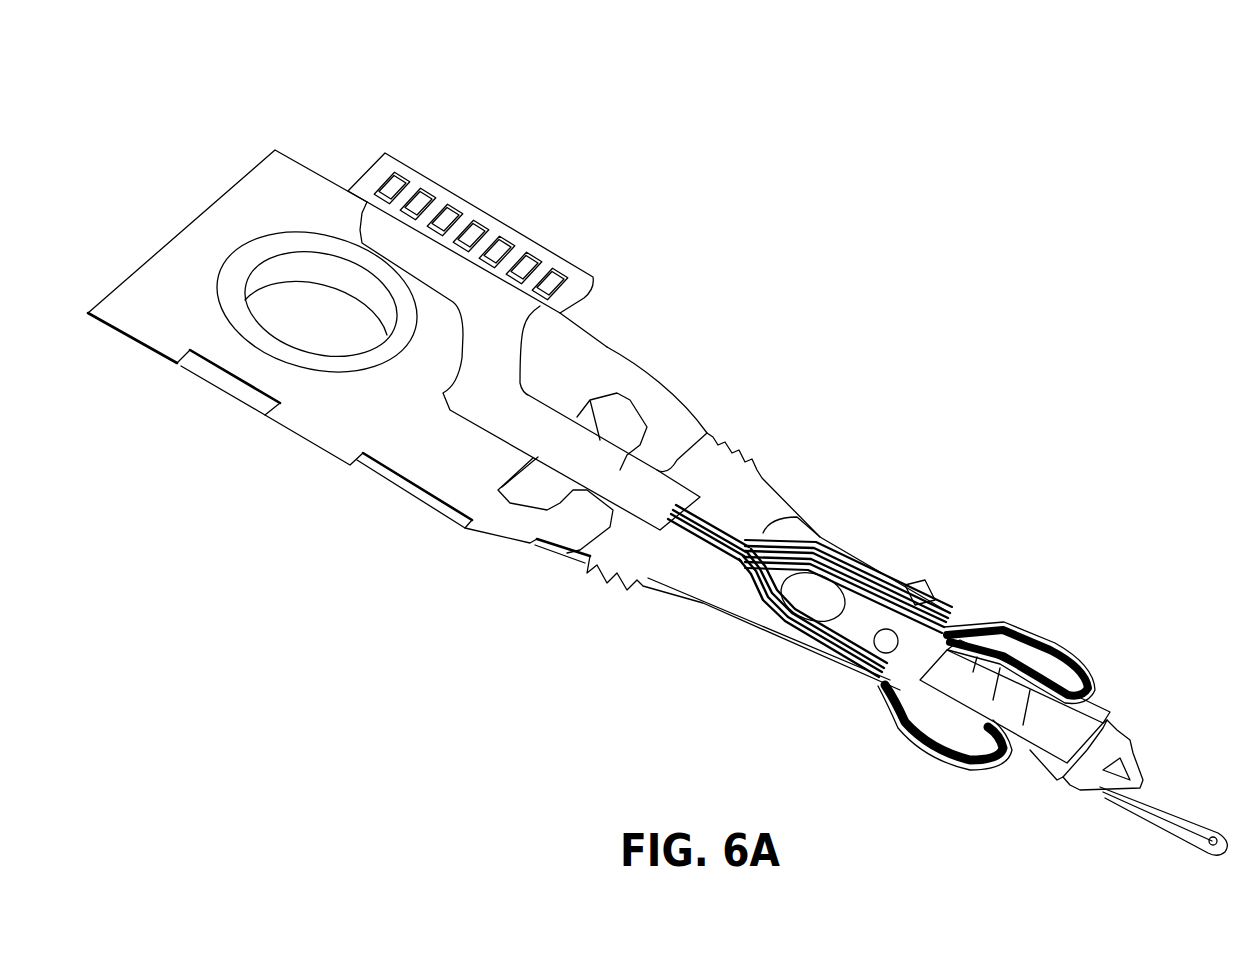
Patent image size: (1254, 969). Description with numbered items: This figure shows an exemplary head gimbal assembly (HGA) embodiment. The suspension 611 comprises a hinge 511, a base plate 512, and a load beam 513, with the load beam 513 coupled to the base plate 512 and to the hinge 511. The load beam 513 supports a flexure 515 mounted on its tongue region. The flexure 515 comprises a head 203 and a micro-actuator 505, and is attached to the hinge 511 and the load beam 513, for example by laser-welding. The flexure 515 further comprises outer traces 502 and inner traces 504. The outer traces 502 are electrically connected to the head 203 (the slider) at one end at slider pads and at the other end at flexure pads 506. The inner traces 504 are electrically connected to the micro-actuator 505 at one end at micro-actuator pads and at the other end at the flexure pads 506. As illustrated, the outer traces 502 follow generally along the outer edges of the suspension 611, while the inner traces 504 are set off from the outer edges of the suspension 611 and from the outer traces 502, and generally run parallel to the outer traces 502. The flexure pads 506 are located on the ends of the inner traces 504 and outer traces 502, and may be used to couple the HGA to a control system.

The base plate 512 is at (190, 253).
The flexure pads 506 is at (547, 277).
The flexure 515 is at (503, 416).
The hinge 511 is at (589, 380).
The outer traces 502 is at (847, 620).
The inner traces 504 is at (882, 610).
The micro-actuator 505 is at (977, 670).
The suspension 611 is at (883, 700).
The head 203 is at (1033, 707).
The load beam 513 is at (1158, 807).